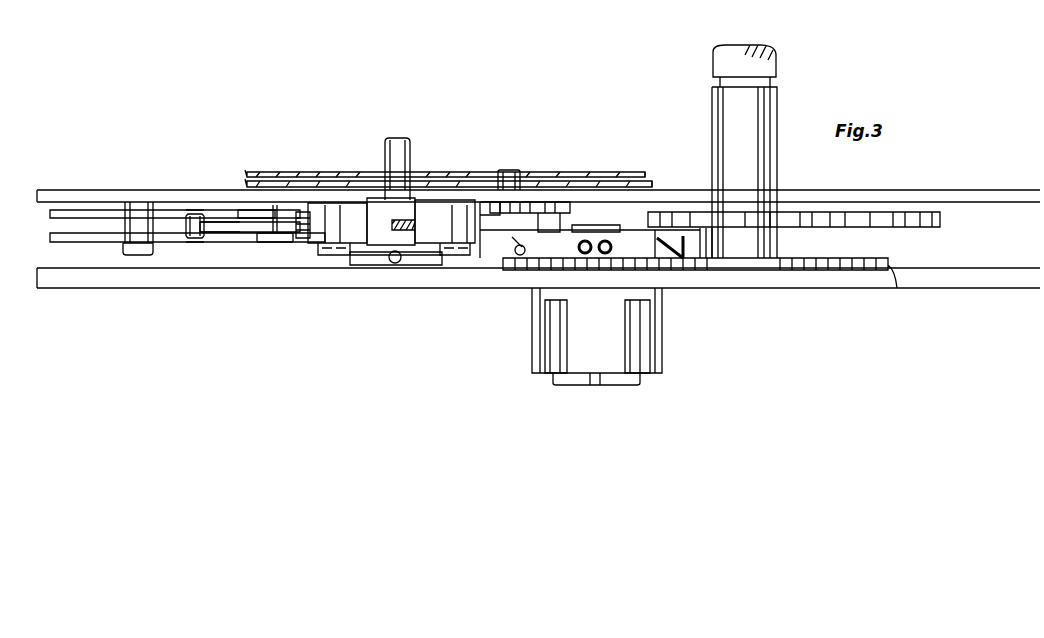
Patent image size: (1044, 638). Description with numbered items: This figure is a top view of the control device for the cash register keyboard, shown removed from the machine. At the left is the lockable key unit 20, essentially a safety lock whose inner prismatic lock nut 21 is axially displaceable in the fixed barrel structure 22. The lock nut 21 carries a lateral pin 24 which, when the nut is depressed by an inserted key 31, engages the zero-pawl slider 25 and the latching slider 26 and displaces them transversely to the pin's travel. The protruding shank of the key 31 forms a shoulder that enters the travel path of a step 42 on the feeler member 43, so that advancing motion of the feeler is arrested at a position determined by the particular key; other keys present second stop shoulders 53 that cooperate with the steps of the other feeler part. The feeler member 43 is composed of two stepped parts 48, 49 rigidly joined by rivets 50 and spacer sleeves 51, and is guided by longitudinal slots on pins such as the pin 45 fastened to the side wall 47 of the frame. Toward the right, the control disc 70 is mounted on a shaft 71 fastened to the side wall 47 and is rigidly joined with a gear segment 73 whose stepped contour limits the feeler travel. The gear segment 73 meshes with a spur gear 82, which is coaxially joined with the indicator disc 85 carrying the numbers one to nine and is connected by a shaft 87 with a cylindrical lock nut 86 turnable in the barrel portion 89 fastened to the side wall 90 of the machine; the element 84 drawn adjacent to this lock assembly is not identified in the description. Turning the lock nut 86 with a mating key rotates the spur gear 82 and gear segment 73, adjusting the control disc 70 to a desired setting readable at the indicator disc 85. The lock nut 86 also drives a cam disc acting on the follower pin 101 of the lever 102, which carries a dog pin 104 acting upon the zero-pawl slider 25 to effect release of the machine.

The lockable key unit 20 is at (367, 260).
The lock nut 21 is at (378, 243).
The barrel structure 22 is at (433, 243).
The lateral pin 24 is at (412, 160).
The zero-pawl slider 25 is at (478, 172).
The latching slider 26 is at (653, 184).
The key 31 is at (437, 240).
The step 42 is at (240, 212).
The feeler member 43 is at (225, 233).
The pin 45 is at (137, 255).
The side wall 47 is at (160, 191).
The stepped part 48 is at (95, 212).
The stepped part 49 is at (90, 240).
The rivet 50 is at (193, 212).
The spacer sleeve 51 is at (215, 226).
The second stop shoulder 53 is at (268, 242).
The control disc 70 is at (895, 217).
The shaft 71 is at (755, 118).
The gear segment 73 is at (897, 270).
The spur gear 82 is at (505, 265).
The housing 84 is at (662, 305).
The indicator disc 85 is at (703, 248).
The lock nut 86 is at (610, 383).
The shaft 87 is at (605, 227).
The barrel portion 89 is at (662, 355).
The side wall 90 is at (956, 290).
The follower pin 101 is at (570, 226).
The lever 102 is at (533, 212).
The dog pin 104 is at (505, 172).